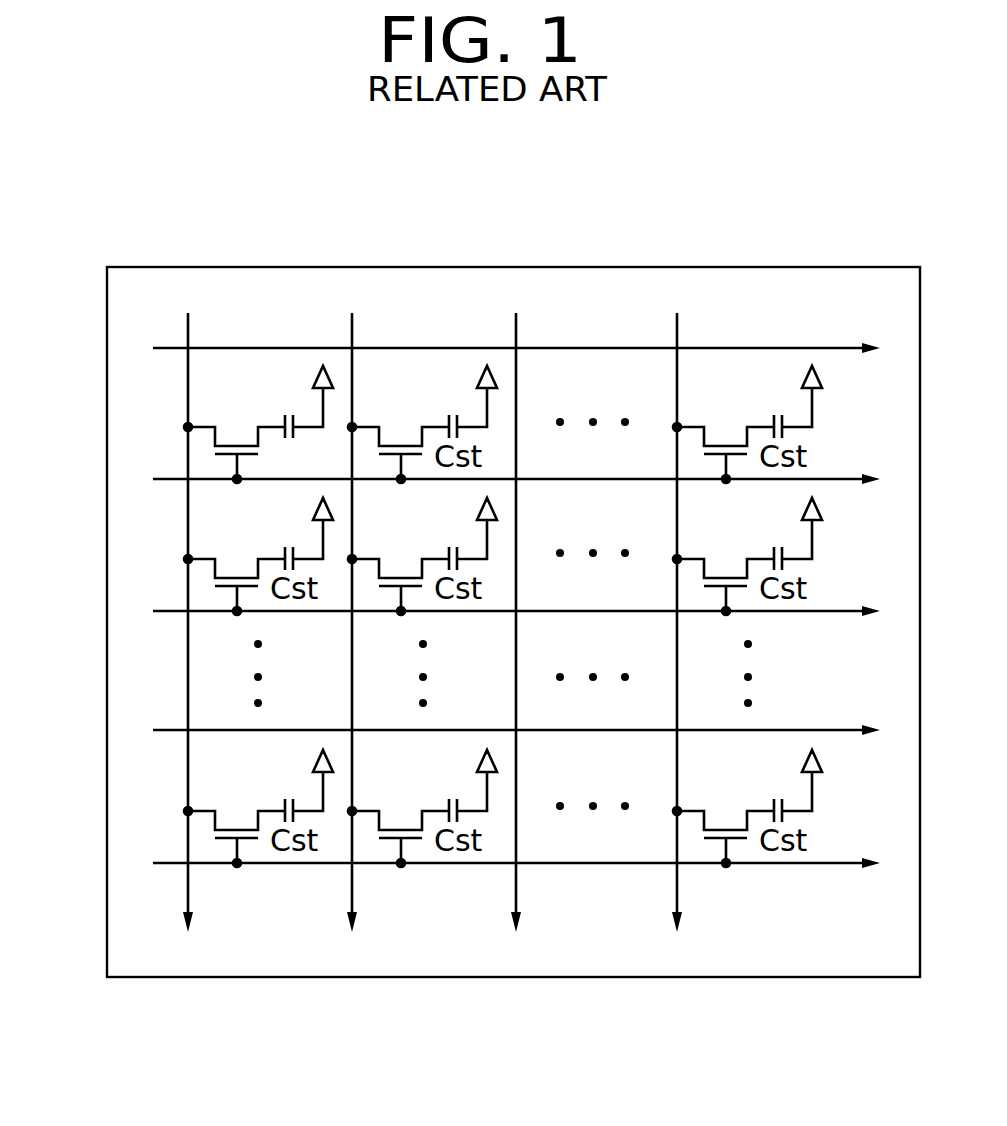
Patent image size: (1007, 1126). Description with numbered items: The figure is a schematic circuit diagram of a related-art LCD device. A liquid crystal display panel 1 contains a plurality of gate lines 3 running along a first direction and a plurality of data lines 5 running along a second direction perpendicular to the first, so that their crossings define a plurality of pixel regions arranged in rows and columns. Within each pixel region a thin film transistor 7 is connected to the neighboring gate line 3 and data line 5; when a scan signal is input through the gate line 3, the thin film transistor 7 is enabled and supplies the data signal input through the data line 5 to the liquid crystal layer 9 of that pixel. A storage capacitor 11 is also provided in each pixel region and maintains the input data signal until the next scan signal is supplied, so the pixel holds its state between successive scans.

The liquid crystal display panel 1 is at (474, 257).
The gate line 3 is at (226, 348).
The data line 5 is at (186, 518).
The thin film transistor 7 is at (203, 441).
The liquid crystal layer 9 is at (325, 364).
The storage capacitor 11 is at (291, 412).